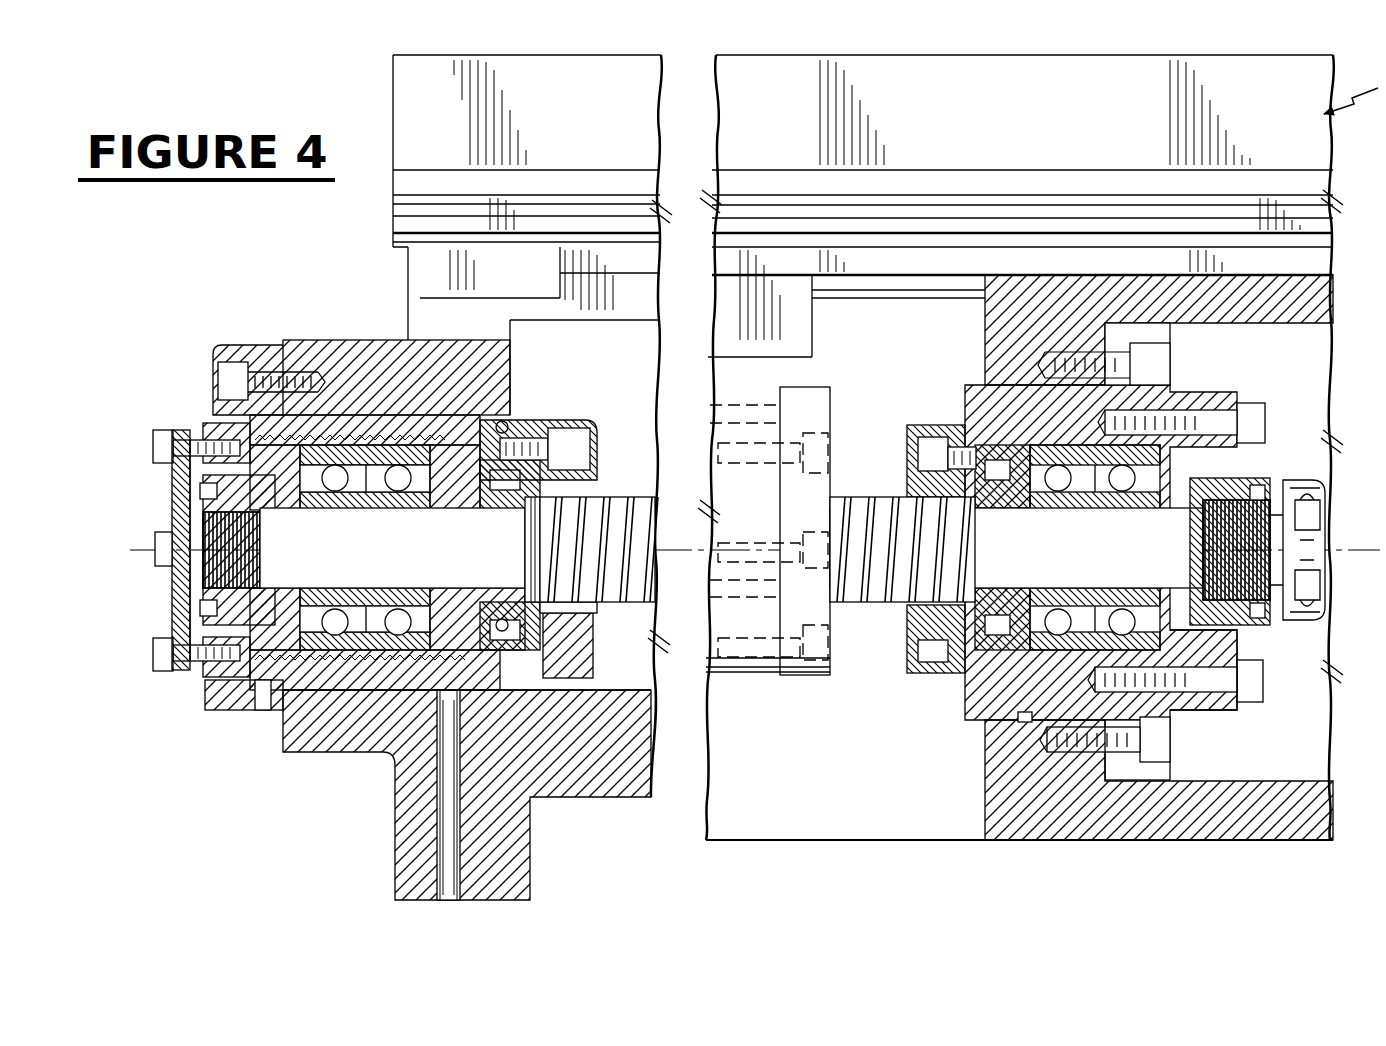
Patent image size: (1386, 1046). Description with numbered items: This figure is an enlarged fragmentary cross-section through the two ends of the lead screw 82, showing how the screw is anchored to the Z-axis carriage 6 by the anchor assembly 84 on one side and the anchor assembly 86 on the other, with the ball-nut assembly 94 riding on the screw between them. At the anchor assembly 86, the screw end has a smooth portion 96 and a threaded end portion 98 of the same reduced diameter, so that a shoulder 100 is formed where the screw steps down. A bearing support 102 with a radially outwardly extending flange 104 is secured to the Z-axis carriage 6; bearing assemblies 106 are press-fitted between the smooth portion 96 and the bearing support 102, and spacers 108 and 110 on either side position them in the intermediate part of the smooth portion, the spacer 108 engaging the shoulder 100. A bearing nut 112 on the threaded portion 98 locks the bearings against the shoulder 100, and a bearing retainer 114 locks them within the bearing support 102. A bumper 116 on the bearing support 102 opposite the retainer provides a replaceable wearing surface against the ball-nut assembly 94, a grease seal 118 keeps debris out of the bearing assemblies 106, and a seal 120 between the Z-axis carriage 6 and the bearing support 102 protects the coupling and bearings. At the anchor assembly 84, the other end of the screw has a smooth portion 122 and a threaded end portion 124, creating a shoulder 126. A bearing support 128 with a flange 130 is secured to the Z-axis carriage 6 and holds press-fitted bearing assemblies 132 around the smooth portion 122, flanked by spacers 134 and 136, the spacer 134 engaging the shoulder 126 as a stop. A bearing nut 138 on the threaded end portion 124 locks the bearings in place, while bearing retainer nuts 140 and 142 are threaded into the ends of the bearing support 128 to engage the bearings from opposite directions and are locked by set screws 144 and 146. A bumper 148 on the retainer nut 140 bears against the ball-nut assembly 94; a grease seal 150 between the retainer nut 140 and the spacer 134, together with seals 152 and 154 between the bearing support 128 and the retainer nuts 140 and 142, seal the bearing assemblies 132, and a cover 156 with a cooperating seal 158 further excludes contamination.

The Z-axis carriage 6 is at (477, 486).
The lead screw 82 is at (616, 608).
The anchor assembly 84 is at (195, 708).
The anchor assembly 86 is at (1280, 440).
The ball-nut assembly 94 is at (805, 675).
The smooth portion 96 is at (1077, 540).
The threaded end portion 98 is at (1300, 522).
The shoulder 100 is at (985, 542).
The bearing support 102 is at (960, 720).
The flange 104 is at (1137, 781).
The bearing assemblies 106 is at (1025, 660).
The spacer 108 is at (1030, 590).
The spacer 110 is at (1155, 590).
The bearing nut 112 is at (1270, 625).
The bearing retainer 114 is at (1220, 710).
The bumper 116 is at (922, 425).
The grease seal 118 is at (945, 460).
The seal 120 is at (1025, 722).
The smooth portion 122 is at (372, 580).
The threaded end portion 124 is at (190, 598).
The shoulder 126 is at (525, 570).
The bearing support 128 is at (225, 343).
The flange 130 is at (266, 340).
The bearing assemblies 132 is at (350, 660).
The spacer 134 is at (465, 508).
The spacer 136 is at (292, 508).
The bearing nut 138 is at (278, 588).
The bearing retainer nut 140 is at (538, 418).
The bearing retainer nut 142 is at (203, 424).
The set screw 144 is at (440, 700).
The set screw 146 is at (262, 713).
The bumper 148 is at (575, 680).
The grease seal 150 is at (495, 665).
The seal 152 is at (500, 420).
The seal 154 is at (228, 418).
The cover 156 is at (172, 498).
The seal 158 is at (172, 568).